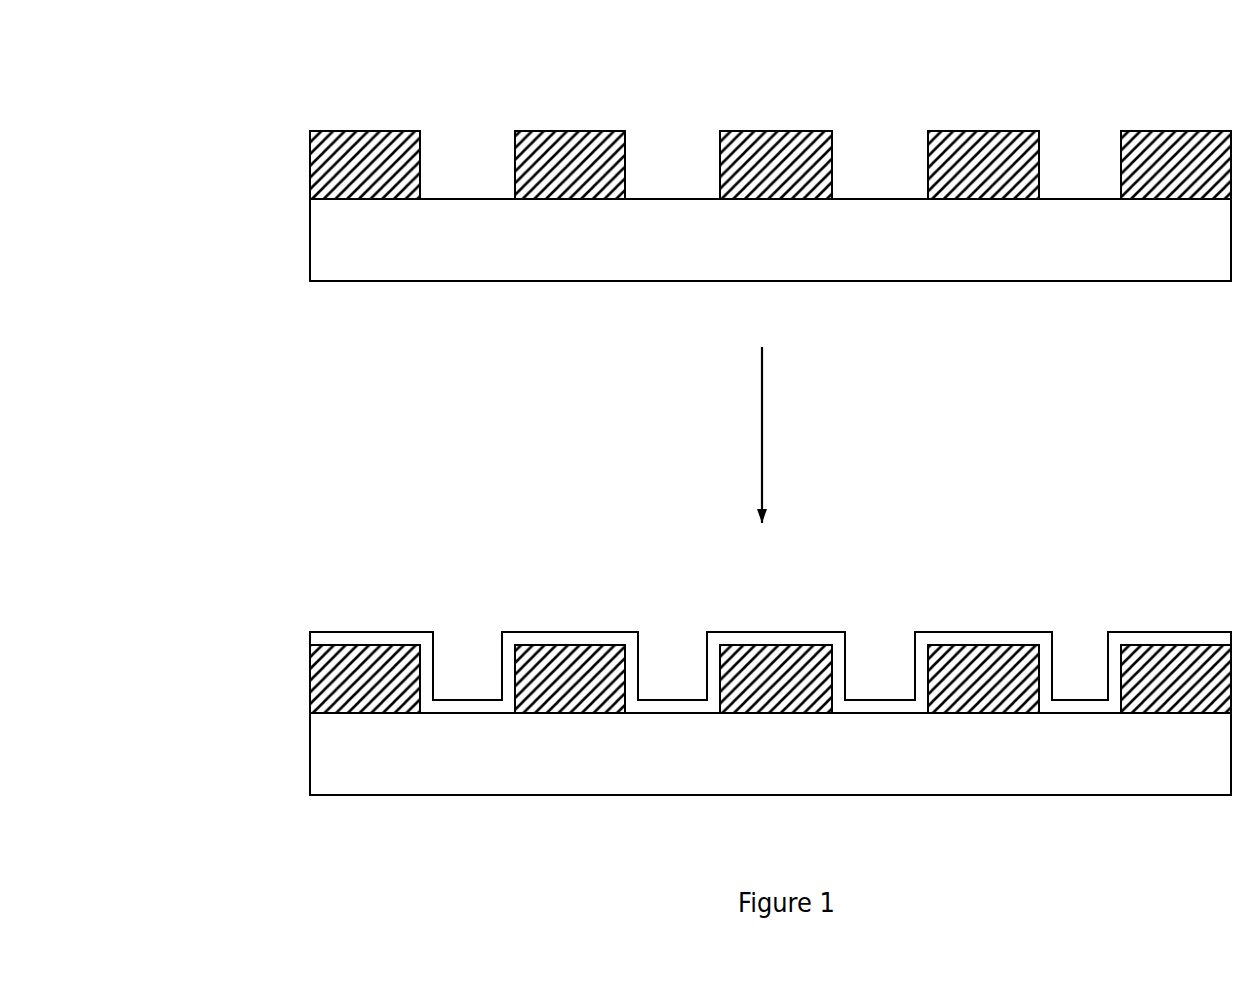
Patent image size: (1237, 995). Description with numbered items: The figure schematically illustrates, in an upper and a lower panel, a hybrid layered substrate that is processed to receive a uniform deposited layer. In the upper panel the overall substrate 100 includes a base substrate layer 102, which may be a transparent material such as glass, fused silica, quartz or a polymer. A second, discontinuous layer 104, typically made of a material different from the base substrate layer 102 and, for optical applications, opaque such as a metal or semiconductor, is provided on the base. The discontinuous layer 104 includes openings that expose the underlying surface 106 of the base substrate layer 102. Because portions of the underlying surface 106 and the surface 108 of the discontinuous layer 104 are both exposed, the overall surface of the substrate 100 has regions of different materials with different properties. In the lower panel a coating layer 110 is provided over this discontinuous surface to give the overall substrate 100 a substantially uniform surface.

The overall substrate 100 is at (255, 375).
The base substrate layer 102 is at (637, 255).
The discontinuous layer 104 is at (310, 185).
The underlying surface 106 is at (887, 200).
The surface of the discontinuous layer 108 is at (775, 130).
The coating layer 110 is at (337, 632).